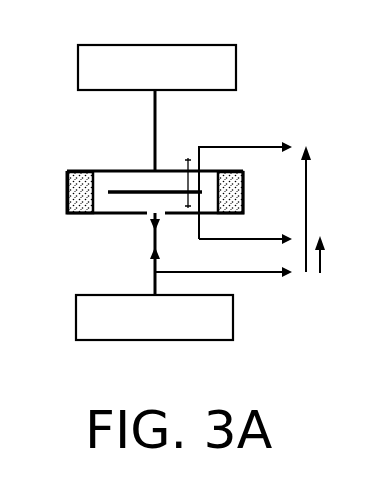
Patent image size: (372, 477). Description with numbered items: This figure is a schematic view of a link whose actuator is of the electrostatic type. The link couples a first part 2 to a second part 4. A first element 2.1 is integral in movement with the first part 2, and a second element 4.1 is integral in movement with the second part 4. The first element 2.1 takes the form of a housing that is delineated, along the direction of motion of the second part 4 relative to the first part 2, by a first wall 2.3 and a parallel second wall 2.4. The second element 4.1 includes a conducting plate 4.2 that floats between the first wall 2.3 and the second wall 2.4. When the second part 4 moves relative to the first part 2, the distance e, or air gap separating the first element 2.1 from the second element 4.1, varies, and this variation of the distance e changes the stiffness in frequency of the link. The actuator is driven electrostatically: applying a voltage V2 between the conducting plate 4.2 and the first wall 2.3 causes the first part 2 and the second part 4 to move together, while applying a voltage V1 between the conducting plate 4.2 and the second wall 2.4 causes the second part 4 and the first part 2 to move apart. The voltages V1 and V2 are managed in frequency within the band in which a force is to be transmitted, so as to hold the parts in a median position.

The first part 2 is at (240, 65).
The first element 2.1 is at (147, 117).
The first wall 2.3 is at (106, 171).
The second wall 2.4 is at (73, 216).
The conducting plate 4.2 is at (129, 195).
The second element 4.1 is at (149, 265).
The second part 4 is at (237, 325).
The distance (air gap) e is at (191, 181).
The voltage V2 is at (248, 209).
The voltage V1 is at (336, 254).